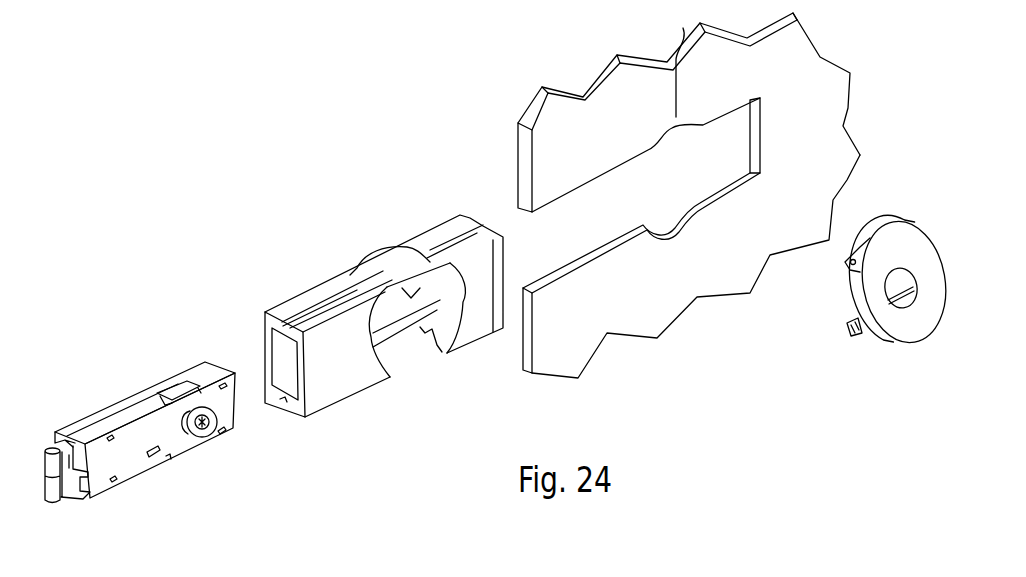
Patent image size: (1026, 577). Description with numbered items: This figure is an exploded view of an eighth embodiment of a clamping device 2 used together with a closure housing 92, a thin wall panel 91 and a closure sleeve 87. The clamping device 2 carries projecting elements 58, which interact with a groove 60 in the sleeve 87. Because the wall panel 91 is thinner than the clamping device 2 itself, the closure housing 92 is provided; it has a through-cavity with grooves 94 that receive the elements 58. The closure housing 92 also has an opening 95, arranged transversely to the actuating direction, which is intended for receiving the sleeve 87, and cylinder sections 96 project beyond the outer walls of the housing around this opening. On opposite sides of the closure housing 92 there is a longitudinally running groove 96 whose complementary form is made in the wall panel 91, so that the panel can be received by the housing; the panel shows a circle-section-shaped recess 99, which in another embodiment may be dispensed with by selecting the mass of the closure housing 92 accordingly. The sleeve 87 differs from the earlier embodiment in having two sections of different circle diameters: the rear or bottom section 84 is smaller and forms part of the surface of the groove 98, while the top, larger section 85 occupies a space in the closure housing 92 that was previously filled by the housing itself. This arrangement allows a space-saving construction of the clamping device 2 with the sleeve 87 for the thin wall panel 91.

The clamping device 2 is at (122, 403).
The projecting elements 58 is at (175, 387).
The closure housing 92 is at (359, 301).
The grooves 94 is at (263, 345).
The opening 95 is at (411, 296).
The cylinder sections 96 is at (381, 252).
The groove 98 is at (322, 300).
The thin wall panel 91 is at (689, 189).
The circle-section-shaped recess 99 is at (683, 28).
The rear or bottom section 84 is at (858, 248).
The top, larger section 85 is at (873, 281).
The groove 60 is at (853, 268).
The closure sleeve 87 is at (873, 333).